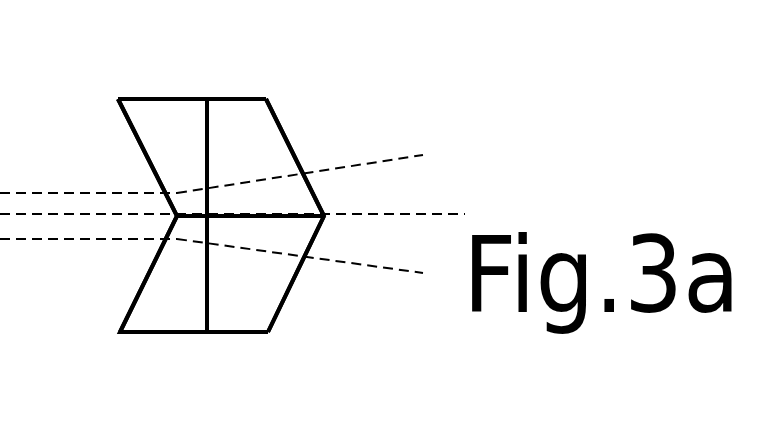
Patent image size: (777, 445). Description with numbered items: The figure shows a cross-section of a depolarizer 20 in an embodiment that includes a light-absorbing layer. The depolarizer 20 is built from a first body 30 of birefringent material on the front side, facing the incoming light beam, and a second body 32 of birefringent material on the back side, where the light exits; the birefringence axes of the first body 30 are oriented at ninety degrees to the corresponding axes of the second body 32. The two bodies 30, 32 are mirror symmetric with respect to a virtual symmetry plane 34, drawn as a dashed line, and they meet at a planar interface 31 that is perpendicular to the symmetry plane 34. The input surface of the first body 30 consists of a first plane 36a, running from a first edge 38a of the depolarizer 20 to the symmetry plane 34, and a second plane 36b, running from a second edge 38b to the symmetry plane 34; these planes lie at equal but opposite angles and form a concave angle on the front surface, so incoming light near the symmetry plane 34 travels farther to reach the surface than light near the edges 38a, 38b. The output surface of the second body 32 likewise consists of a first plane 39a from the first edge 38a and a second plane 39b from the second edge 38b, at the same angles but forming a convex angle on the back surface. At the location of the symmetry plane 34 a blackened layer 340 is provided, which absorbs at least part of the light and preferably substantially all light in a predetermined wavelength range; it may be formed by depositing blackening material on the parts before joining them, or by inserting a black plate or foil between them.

The first depolarizer 20 is at (250, 226).
The first body 30 is at (173, 303).
The interface 31 is at (210, 128).
The second body 32 is at (262, 303).
The symmetry plane 34 is at (430, 211).
The blackened layer 340 is at (277, 217).
The first plane 36a is at (137, 137).
The second plane 36b is at (143, 283).
The first edge 38a is at (157, 99).
The second edge 38b is at (136, 333).
The first plane 39a is at (283, 130).
The second plane 39b is at (287, 305).